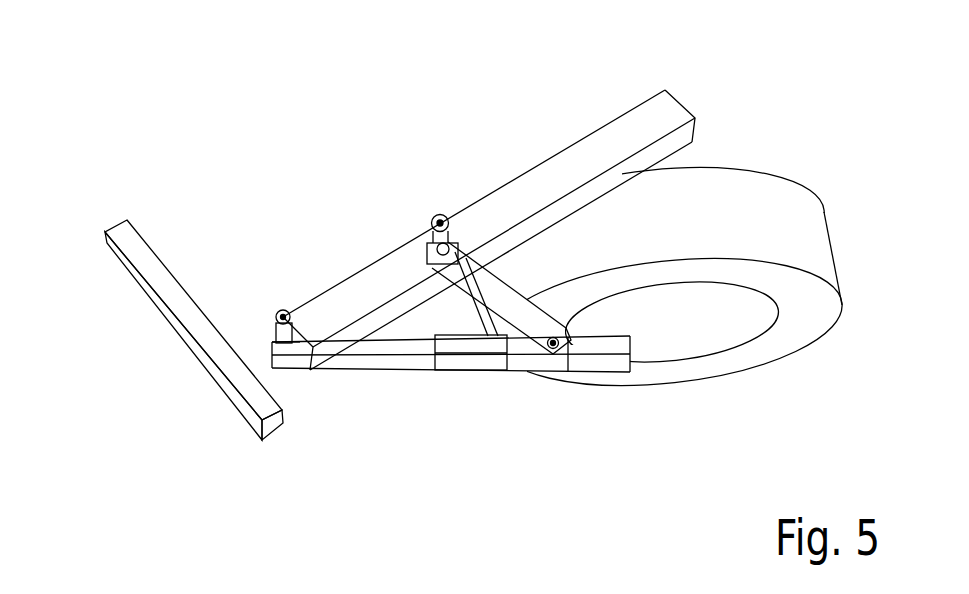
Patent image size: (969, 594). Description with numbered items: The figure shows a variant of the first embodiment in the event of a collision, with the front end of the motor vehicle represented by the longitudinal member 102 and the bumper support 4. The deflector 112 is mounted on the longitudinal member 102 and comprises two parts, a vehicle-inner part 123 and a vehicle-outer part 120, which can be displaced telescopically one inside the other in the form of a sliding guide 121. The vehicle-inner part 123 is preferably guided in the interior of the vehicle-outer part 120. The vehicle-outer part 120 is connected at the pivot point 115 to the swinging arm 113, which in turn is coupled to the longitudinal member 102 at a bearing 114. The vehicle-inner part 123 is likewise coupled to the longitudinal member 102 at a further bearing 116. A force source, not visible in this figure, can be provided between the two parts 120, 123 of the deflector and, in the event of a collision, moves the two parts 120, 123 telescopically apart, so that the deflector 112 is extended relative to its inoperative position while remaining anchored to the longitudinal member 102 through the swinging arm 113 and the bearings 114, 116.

The bumper support 4 is at (130, 242).
The longitudinal member 102 is at (368, 288).
The deflector 112 is at (411, 382).
The swinging arm 113 is at (475, 279).
The bearing 114 is at (436, 216).
The pivot point 115 is at (553, 349).
The further bearing 116 is at (278, 312).
The vehicle-outer part 120 is at (507, 353).
The sliding guide 121 is at (465, 348).
The vehicle-inner part 123 is at (377, 347).